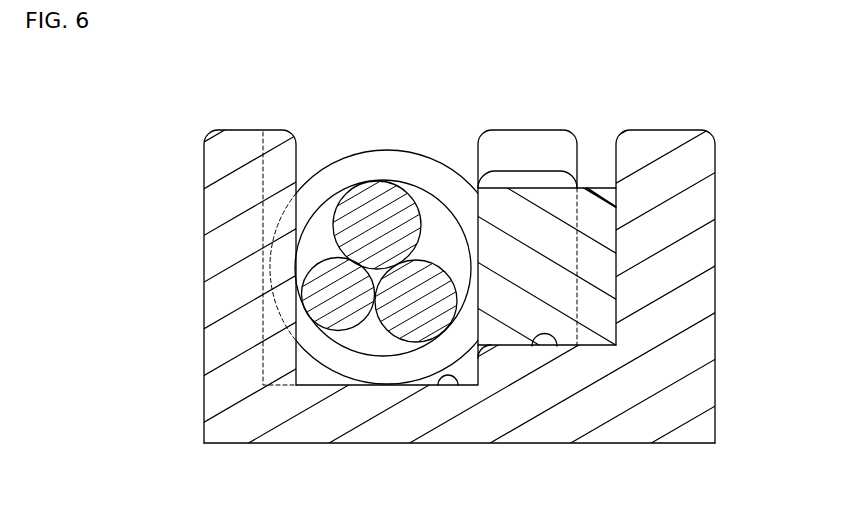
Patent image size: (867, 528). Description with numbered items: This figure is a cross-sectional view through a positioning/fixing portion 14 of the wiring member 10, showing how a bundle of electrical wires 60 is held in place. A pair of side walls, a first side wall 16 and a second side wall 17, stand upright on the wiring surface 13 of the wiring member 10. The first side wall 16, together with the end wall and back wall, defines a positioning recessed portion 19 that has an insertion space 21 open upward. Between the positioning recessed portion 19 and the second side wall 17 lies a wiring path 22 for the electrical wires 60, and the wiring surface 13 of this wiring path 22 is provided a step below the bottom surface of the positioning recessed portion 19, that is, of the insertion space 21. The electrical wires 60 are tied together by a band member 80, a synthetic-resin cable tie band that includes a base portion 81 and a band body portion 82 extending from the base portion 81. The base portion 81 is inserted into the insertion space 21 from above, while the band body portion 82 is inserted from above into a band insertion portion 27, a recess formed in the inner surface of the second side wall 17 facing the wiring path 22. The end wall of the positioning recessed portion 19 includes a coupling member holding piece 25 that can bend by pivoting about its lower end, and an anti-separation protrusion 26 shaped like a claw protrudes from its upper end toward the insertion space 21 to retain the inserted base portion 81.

The wiring member 10 is at (657, 127).
The wiring surface 13 is at (458, 385).
The positioning/fixing portion 14 is at (747, 167).
The first side wall 16 is at (690, 160).
The second side wall 17 is at (237, 153).
The positioning recessed portion 19 is at (614, 204).
The insertion space 21 is at (557, 346).
The wiring path 22 is at (313, 377).
The coupling member holding piece 25 is at (552, 128).
The anti-separation protrusion 26 is at (525, 158).
The band insertion portion 27 is at (272, 187).
The electrical wires 60 is at (426, 295).
The band member 80 is at (330, 157).
The base portion 81 is at (602, 233).
The band body portion 82 is at (363, 163).